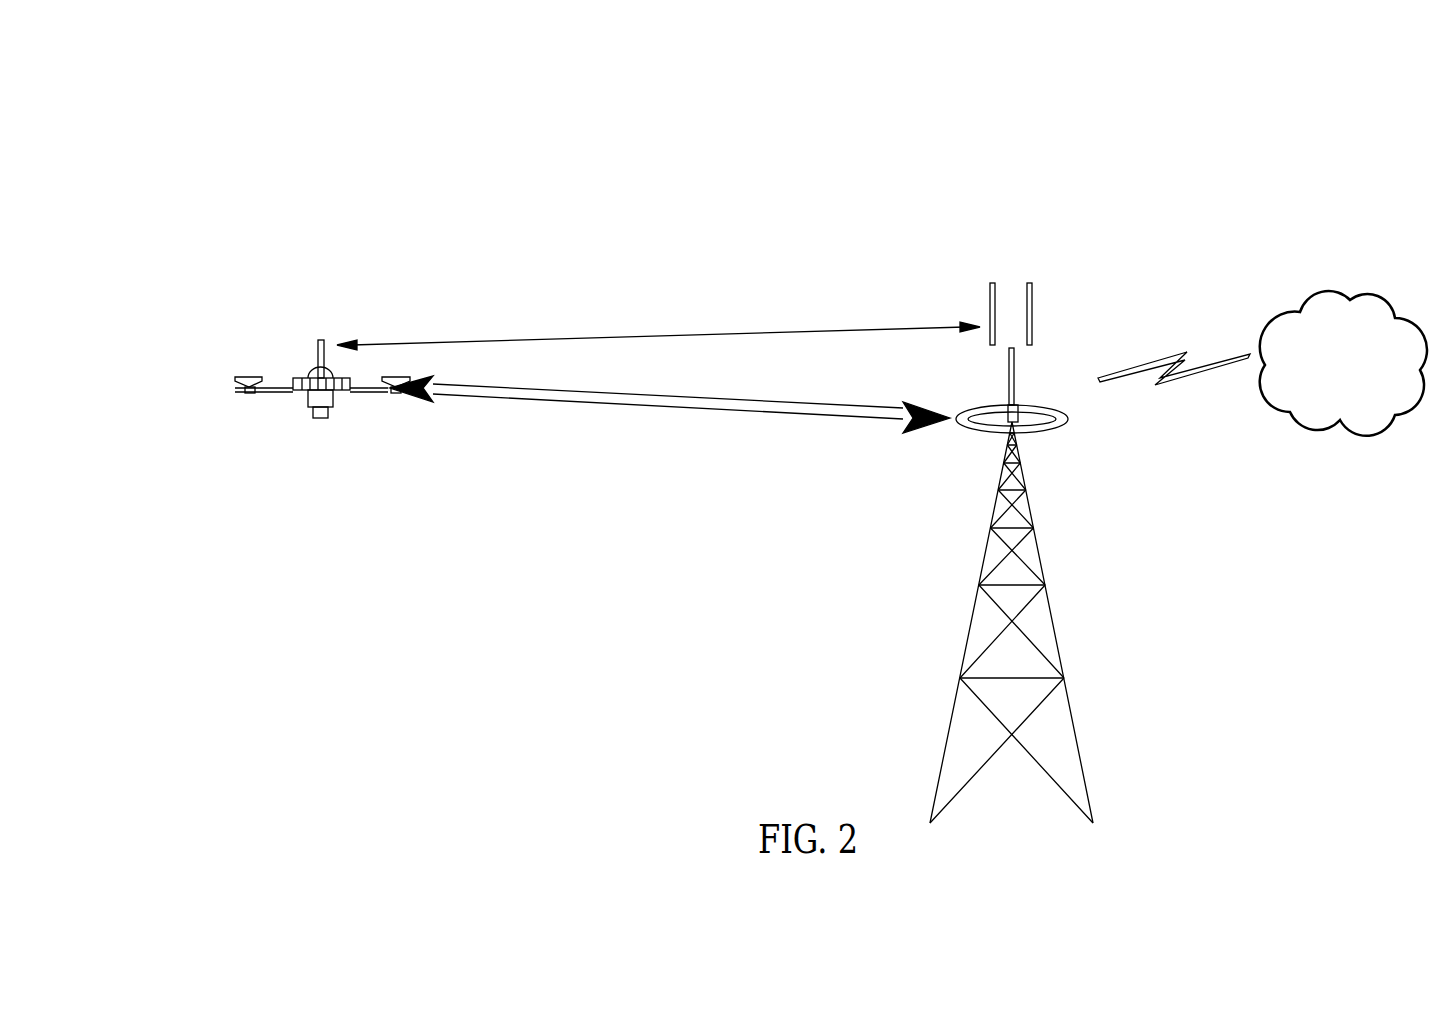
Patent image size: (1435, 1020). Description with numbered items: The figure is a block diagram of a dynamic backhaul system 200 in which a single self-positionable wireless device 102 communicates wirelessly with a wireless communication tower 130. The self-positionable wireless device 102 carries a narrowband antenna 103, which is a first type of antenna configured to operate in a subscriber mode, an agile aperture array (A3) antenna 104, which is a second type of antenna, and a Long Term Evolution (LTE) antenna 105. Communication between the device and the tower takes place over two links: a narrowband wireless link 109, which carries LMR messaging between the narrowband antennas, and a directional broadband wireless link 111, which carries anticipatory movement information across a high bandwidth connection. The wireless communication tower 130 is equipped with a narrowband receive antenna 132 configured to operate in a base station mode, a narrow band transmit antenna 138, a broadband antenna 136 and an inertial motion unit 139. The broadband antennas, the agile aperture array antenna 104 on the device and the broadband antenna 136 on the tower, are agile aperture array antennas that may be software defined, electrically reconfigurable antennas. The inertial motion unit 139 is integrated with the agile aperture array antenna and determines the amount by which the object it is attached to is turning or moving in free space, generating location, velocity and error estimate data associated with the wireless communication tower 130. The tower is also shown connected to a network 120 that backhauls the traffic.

The dynamic backhaul system 200 is at (226, 176).
The self-positionable wireless device 102 is at (295, 392).
The narrowband antenna 103 is at (290, 270).
The agile aperture array (A3) antenna 104 is at (343, 393).
The Long Term Evolution (LTE) antenna 105 is at (332, 397).
The narrowband wireless link 109 is at (815, 331).
The directional broadband wireless link 111 is at (658, 397).
The narrowband receive antenna 132 is at (943, 272).
The narrow band transmit antenna 138 is at (1008, 373).
The inertial motion unit 139 is at (1018, 405).
The broadband antenna 136 is at (1068, 419).
The wireless communication tower 130 is at (1057, 627).
The network 120 is at (1327, 300).